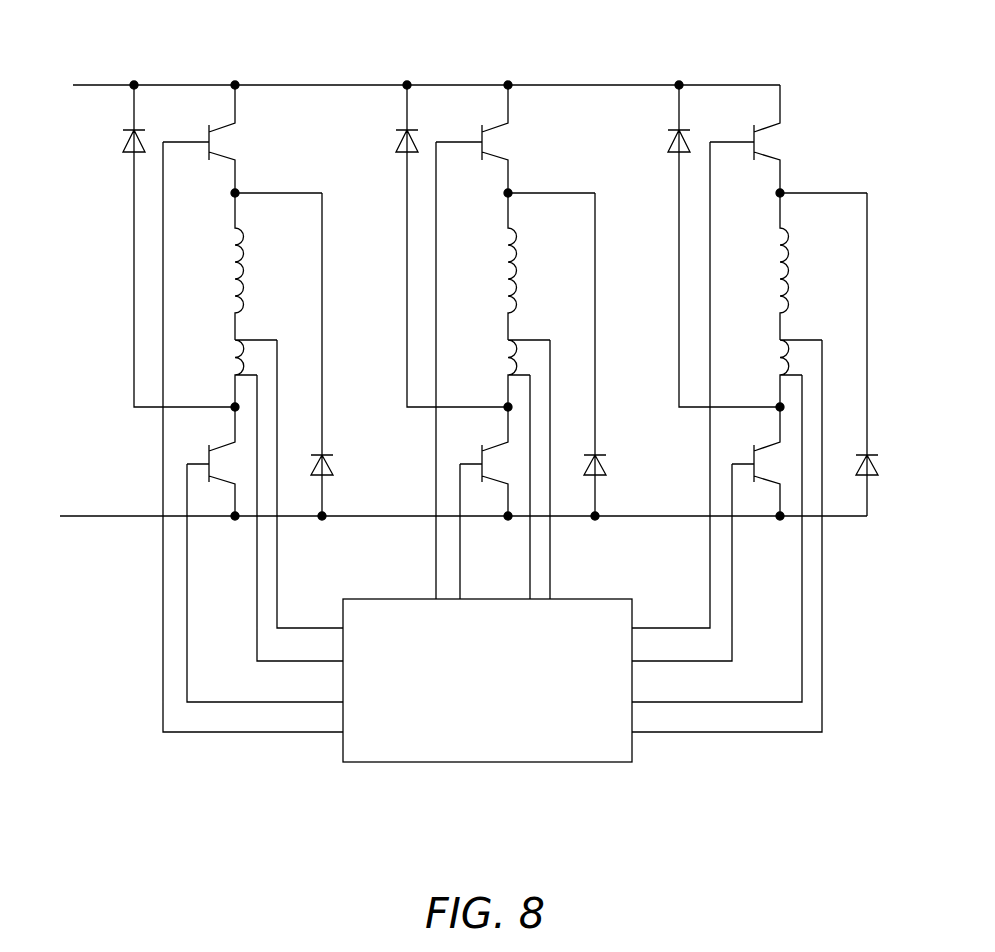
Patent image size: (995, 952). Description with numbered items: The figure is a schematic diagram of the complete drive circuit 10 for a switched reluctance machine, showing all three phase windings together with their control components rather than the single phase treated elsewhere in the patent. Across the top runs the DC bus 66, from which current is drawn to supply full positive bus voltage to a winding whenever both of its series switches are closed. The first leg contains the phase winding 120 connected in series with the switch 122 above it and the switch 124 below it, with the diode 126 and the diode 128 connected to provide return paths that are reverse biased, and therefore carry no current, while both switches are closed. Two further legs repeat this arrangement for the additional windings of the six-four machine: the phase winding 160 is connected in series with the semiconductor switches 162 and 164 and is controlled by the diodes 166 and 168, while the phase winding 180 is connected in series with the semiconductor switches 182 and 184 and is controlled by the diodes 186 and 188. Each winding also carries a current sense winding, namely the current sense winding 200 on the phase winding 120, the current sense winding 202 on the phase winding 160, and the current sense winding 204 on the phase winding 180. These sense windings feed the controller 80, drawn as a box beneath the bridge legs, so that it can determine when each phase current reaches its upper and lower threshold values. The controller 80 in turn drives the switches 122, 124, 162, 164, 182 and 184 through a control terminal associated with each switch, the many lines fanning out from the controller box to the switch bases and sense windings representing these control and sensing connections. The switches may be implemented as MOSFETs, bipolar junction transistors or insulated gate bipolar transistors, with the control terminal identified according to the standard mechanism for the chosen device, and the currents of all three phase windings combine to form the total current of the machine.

The motor drive circuit 10 is at (597, 49).
The DC bus 66 is at (100, 84).
The controller 80 is at (551, 763).
The phase winding 120 is at (228, 275).
The switch 122 is at (240, 141).
The switch 124 is at (205, 458).
The diode 126 is at (122, 147).
The diode 128 is at (335, 466).
The phase winding 160 is at (501, 275).
The semiconductor switch 162 is at (513, 141).
The semiconductor switch 164 is at (478, 458).
The diode 166 is at (395, 147).
The diode 168 is at (608, 466).
The phase winding 180 is at (773, 275).
The semiconductor switch 182 is at (785, 141).
The semiconductor switch 184 is at (750, 458).
The diode 186 is at (667, 147).
The diode 188 is at (878, 464).
The current sense winding 200 is at (228, 365).
The current sense winding 202 is at (501, 365).
The current sense winding 204 is at (773, 365).